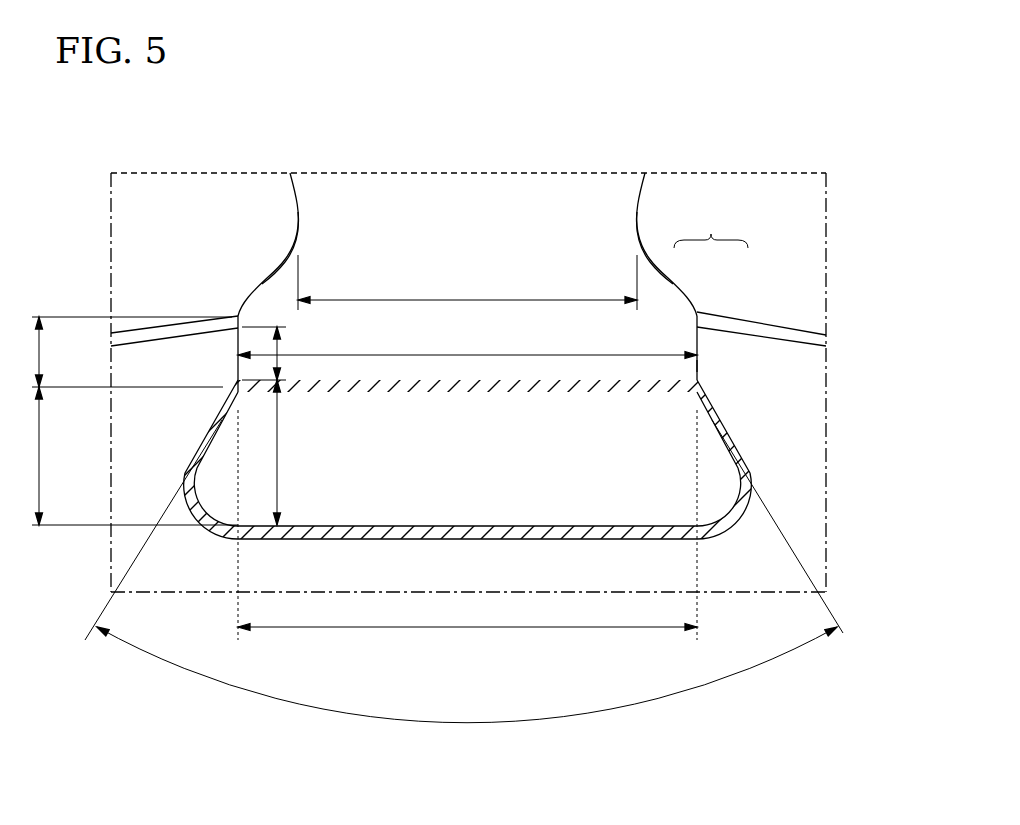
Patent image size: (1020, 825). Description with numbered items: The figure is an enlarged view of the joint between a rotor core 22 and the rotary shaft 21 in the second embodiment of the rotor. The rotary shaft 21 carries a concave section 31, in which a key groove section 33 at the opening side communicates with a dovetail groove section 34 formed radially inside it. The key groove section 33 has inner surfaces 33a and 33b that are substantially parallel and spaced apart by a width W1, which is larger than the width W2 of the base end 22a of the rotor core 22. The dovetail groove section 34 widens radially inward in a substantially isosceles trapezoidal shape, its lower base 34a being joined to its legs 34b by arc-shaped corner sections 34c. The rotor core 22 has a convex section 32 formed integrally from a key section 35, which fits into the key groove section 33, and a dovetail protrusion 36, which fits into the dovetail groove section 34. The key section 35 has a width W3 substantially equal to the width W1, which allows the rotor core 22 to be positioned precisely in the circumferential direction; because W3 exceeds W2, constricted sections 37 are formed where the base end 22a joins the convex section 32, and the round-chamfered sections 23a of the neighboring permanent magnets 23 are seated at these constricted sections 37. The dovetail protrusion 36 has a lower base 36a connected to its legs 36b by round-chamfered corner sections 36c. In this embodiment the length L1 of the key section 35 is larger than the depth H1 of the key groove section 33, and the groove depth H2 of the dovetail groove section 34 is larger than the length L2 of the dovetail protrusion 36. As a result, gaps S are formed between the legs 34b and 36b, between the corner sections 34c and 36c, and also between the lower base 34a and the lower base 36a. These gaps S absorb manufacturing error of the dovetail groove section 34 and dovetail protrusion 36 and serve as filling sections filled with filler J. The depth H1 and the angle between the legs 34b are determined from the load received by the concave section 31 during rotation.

The rotary shaft 21 is at (200, 567).
The rotor core 22 is at (449, 214).
The base end 22a is at (291, 237).
The permanent magnet 23 is at (169, 187).
The round-chamfered section 23a is at (300, 258).
The concave section 31 is at (711, 228).
The convex section 32 is at (439, 312).
The key groove section 33 is at (697, 345).
The inner surface 33a is at (697, 365).
The inner surface 33b is at (241, 369).
The dovetail groove section 34 is at (467, 387).
The lower base 34a is at (480, 525).
The leg 34b is at (215, 425).
The corner section 34c is at (192, 493).
The key section 35 is at (237, 348).
The dovetail protrusion 36 is at (482, 485).
The lower base 36a is at (576, 540).
The leg 36b is at (203, 451).
The corner section 36c is at (203, 523).
The constricted section 37 is at (646, 256).
The filler J is at (714, 405).
The gap S is at (185, 478).
The width of the key groove section W1 is at (467, 342).
The width of the base end W2 is at (467, 287).
The width of the key section W3 is at (467, 525).
The depth of the key groove section H1 is at (278, 350).
The groove depth of the dovetail groove section H2 is at (278, 442).
The length of the key section L1 is at (120, 352).
The length of the dovetail protrusion L2 is at (123, 456).